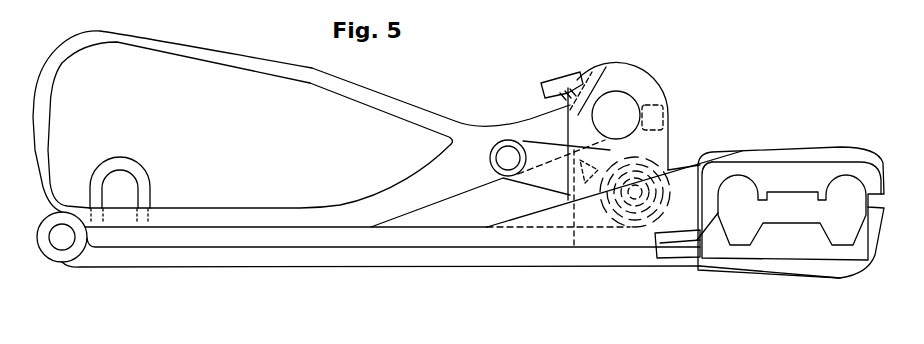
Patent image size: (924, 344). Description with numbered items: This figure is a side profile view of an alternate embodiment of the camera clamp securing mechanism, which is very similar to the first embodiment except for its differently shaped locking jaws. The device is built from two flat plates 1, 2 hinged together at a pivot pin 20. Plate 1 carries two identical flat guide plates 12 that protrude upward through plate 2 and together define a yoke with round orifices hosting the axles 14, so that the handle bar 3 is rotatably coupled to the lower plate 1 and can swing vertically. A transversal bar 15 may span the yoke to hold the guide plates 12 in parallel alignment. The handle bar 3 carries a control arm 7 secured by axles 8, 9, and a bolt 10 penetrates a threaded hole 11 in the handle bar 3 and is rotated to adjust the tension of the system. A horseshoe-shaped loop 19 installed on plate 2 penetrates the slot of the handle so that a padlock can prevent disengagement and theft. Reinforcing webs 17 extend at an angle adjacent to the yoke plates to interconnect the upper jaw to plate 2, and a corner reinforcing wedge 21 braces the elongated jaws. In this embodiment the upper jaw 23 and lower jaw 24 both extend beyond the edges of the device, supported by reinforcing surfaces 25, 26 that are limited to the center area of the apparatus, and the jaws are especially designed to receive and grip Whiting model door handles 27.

The flat plate 1 is at (307, 260).
The flat plate 2 is at (227, 236).
The handle bar 3 is at (460, 120).
The control arm 7 is at (538, 153).
The axle 8 is at (508, 140).
The axle 9 is at (634, 194).
The bolt 10 is at (557, 83).
The threaded hole 11 is at (578, 113).
The flat guide plate 12 is at (623, 78).
The axle 14 is at (627, 102).
The transversal bar 15 is at (657, 110).
The reinforcing web 17 is at (673, 158).
The horseshoe-shaped loop 19 is at (137, 167).
The pivot pin 20 is at (65, 240).
The corner reinforcing wedge 21 is at (700, 252).
The upper jaw 23 is at (778, 175).
The lower jaw 24 is at (790, 243).
The reinforcing surface 25 is at (842, 147).
The reinforcing surface 26 is at (842, 277).
The door handle 27 is at (840, 195).